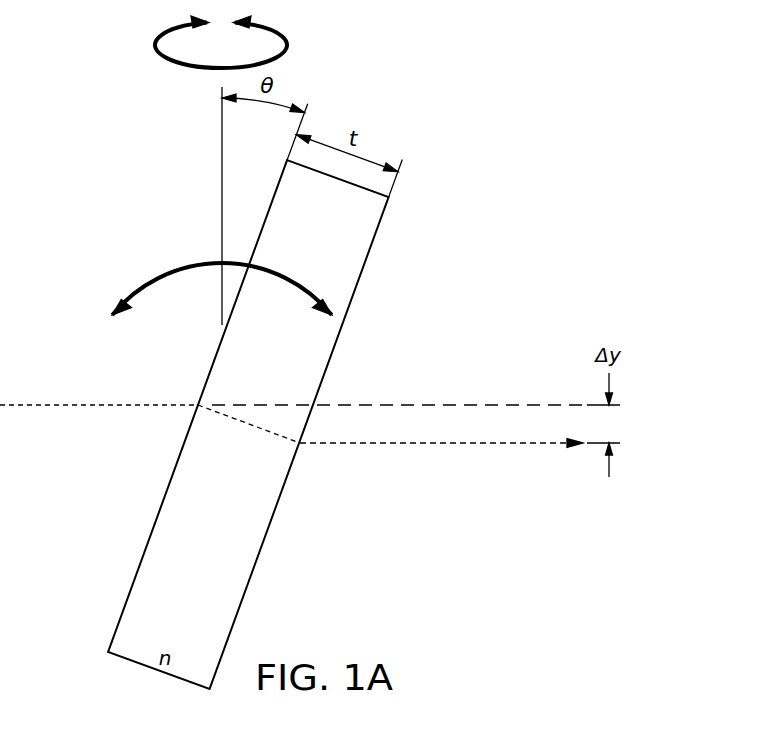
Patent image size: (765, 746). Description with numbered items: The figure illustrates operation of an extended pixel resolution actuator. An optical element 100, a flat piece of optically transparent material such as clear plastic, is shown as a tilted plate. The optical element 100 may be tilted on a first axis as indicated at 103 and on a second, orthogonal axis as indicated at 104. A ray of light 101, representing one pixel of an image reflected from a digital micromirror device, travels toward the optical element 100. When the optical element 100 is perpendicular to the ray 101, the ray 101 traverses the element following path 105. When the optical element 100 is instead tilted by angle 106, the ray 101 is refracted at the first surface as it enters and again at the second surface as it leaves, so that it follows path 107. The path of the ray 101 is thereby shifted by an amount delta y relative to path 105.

The optical element 100 is at (152, 530).
The ray of light 101 is at (95, 405).
The first axis tilt 103 is at (172, 270).
The second axis tilt 104 is at (155, 45).
The path 105 is at (450, 405).
The angle 106 is at (221, 297).
The path 107 is at (433, 443).